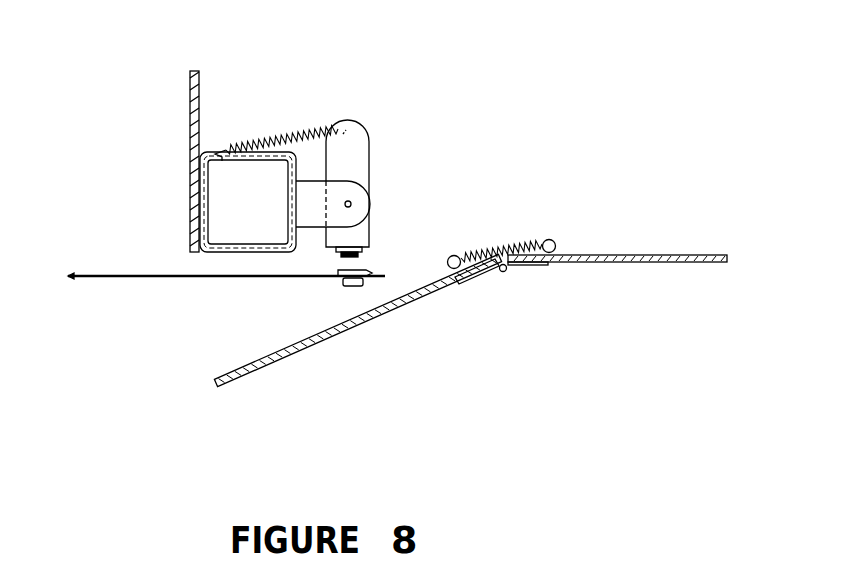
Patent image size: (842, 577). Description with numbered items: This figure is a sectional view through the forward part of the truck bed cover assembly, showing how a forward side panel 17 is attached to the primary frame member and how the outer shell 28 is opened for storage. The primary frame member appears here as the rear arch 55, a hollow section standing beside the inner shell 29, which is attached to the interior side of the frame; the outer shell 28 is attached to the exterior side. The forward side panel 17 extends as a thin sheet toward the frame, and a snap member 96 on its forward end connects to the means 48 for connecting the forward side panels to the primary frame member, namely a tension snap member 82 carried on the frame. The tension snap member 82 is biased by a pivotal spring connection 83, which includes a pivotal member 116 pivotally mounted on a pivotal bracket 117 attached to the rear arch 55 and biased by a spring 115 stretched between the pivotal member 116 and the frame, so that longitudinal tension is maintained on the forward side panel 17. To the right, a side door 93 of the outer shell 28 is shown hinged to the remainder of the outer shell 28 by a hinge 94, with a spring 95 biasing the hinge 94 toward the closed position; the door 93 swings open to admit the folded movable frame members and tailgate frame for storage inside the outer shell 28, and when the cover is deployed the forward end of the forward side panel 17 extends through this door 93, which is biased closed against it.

The forward side panel 17 is at (165, 280).
The outer shell 28 is at (655, 262).
The inner shell 29 is at (190, 134).
The means for connecting forward side panels to primary frame member 48 is at (392, 231).
The rear arch 55 is at (208, 152).
The tension snap member 82 is at (360, 256).
The pivotal spring connection 83 is at (393, 68).
The side door 93 is at (396, 308).
The hinge 94 is at (545, 265).
The spring 95 is at (510, 240).
The snap member 96 is at (348, 284).
The spring 115 is at (266, 140).
The pivotal member 116 is at (350, 122).
The pivotal bracket 117 is at (357, 183).